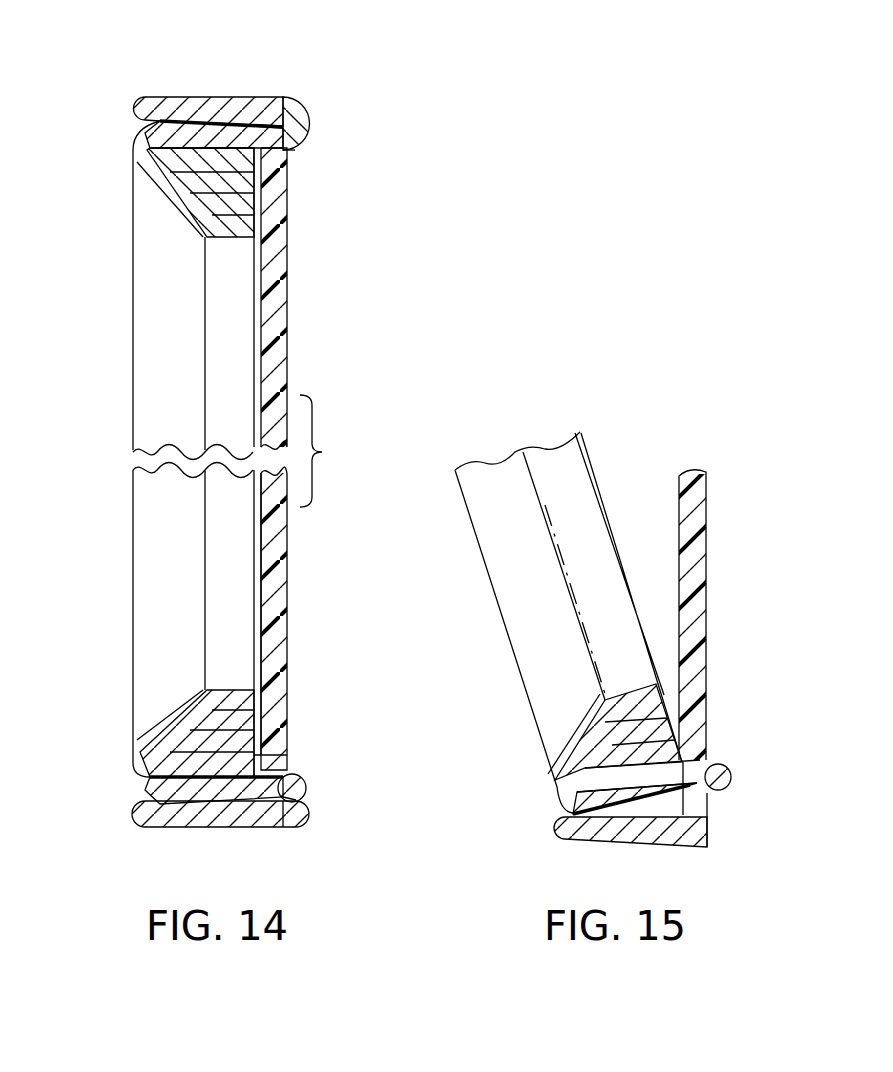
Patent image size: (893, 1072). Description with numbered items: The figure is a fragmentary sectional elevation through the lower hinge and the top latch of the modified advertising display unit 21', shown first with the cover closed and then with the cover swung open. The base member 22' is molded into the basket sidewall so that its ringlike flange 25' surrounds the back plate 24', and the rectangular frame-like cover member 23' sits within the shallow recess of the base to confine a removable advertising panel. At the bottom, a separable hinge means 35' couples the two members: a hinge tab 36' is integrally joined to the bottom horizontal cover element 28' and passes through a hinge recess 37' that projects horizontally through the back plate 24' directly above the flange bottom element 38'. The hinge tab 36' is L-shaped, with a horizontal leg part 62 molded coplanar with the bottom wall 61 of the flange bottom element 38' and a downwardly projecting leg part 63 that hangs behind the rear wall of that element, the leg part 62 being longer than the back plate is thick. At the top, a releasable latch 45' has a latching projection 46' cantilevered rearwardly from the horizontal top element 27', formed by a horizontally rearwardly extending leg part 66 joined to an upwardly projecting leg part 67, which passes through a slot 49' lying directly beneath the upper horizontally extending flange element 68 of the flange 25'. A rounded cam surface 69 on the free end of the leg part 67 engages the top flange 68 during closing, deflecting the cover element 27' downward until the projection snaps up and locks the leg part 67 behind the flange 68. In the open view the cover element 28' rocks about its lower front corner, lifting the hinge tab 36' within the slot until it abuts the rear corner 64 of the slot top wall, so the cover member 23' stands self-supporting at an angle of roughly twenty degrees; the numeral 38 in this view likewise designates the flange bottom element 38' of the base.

In FIG. 14, the advertising display unit 21' is at (239, 467).
In FIG. 14, the base member 22' is at (317, 298).
In FIG. 14, the cover member 23' is at (149, 449).
In FIG. 15, the cover member 23' is at (553, 622).
In FIG. 14, the back plate 24' is at (317, 618).
In FIG. 15, the back plate 24' is at (737, 615).
In FIG. 14, the ringlike flange 25' is at (254, 104).
In FIG. 14, the horizontal top element 27' is at (155, 192).
In FIG. 14, the bottom horizontal cover element 28' is at (145, 733).
In FIG. 15, the bottom horizontal cover element 28' is at (573, 732).
In FIG. 14, the hinge means 35' is at (249, 790).
In FIG. 15, the hinge means 35' is at (667, 780).
In FIG. 14, the hinge tab 36' is at (355, 822).
In FIG. 14, the hinge recess 37' is at (316, 714).
In FIG. 15, the bottom plate 38 is at (607, 847).
In FIG. 14, the flange bottom element 38' is at (247, 854).
In FIG. 14, the releasable latch 45' is at (338, 297).
In FIG. 14, the latching projection 46' is at (285, 104).
In FIG. 14, the slot 49' is at (308, 297).
In FIG. 14, the bottom wall 61 is at (204, 800).
In FIG. 14, the horizontal leg part 62 is at (297, 776).
In FIG. 14, the downwardly projecting leg part 63 is at (302, 812).
In FIG. 15, the rear corner 64 is at (724, 766).
In FIG. 14, the horizontally rearwardly extending leg part 66 is at (292, 152).
In FIG. 14, the upwardly projecting leg part 67 is at (300, 120).
In FIG. 14, the upper horizontally extending flange element 68 is at (242, 97).
In FIG. 14, the rounded cam surface 69 is at (300, 100).